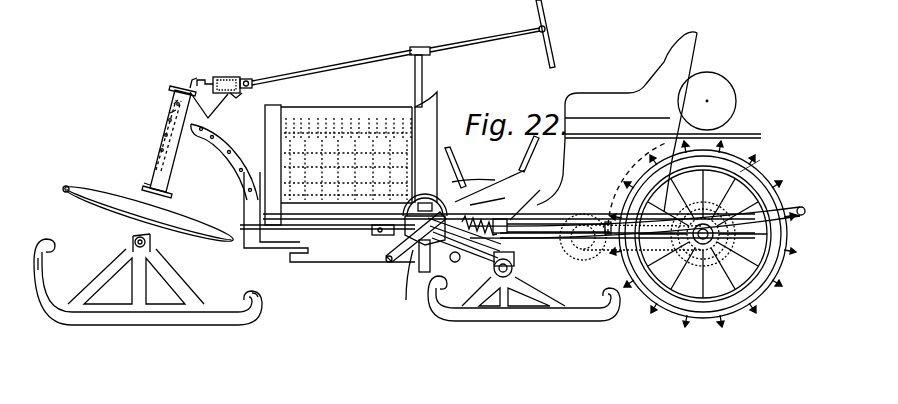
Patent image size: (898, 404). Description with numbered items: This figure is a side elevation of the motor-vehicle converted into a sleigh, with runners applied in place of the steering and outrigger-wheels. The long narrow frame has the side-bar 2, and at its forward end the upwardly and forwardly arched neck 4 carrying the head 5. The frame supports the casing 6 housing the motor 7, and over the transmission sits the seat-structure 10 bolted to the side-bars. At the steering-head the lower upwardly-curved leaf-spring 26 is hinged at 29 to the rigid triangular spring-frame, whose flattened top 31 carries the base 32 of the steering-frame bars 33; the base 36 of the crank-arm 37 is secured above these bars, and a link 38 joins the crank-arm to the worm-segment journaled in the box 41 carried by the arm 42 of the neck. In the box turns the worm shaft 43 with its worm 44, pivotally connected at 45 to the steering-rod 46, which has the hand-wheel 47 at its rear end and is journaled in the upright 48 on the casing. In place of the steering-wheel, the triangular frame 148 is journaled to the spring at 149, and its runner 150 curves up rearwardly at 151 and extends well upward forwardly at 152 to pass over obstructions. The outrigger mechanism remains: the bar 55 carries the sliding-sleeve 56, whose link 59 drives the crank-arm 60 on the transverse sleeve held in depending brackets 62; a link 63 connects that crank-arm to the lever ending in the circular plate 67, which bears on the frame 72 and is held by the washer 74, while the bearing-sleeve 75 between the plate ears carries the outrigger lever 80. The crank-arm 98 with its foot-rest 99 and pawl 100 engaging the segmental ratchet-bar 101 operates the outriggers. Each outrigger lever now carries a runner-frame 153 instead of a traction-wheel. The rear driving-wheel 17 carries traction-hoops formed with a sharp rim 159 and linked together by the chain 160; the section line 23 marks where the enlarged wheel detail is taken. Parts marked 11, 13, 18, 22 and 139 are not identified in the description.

The side-bar 2 is at (497, 217).
The arched neck 4 is at (230, 148).
The head 5 is at (172, 114).
The casing 6 is at (283, 90).
The motor 7 is at (347, 159).
The seat-structure 10 is at (610, 104).
The drive bar 11 is at (801, 207).
The bar end 13 is at (800, 218).
The rear driving-wheel 17 is at (688, 318).
The hub gear 18 is at (722, 257).
The hub 22 is at (733, 245).
The section line 23 is at (712, 262).
The leaf-spring 26 is at (180, 238).
The hinge 29 is at (66, 186).
The flattened top 31 is at (172, 193).
The base 32 is at (147, 186).
The steering-frame bars 33 is at (165, 140).
The base of crank-arm 36 is at (178, 86).
The crank-arm 37 is at (192, 80).
The link 38 is at (205, 78).
The box 41 is at (220, 77).
The arm 42 is at (210, 116).
The worm shaft 43 is at (240, 92).
The worm 44 is at (232, 78).
The pivotal connection 45 is at (249, 81).
The steering-rod 46 is at (342, 65).
The hand-wheel 47 is at (549, 22).
The upright 48 is at (422, 70).
The bar 55 is at (530, 233).
The sliding-sleeve 56 is at (516, 218).
The link 59 is at (518, 180).
The crank-arm 60 is at (456, 264).
The depending bracket 62 is at (478, 256).
The link 63 is at (406, 302).
The circular plate 67 is at (403, 214).
The frame 72 is at (390, 231).
The washer 74 is at (397, 263).
The bearing-sleeve 75 is at (417, 203).
The outrigger lever 80 is at (495, 258).
The crank-arm 98 is at (470, 176).
The foot-rest 99 is at (452, 155).
The pawl 100 is at (488, 178).
The segmental ratchet-bar 101 is at (495, 195).
The lever 139 is at (534, 142).
The triangular frame 148 is at (175, 285).
The journal 149 is at (134, 242).
The runner 150 is at (152, 323).
The rearward upturned end 151 is at (262, 303).
The forward upturned end 152 is at (45, 240).
The runner-frame 153 is at (514, 318).
The sharp rim 159 is at (757, 152).
The chain 160 is at (655, 312).